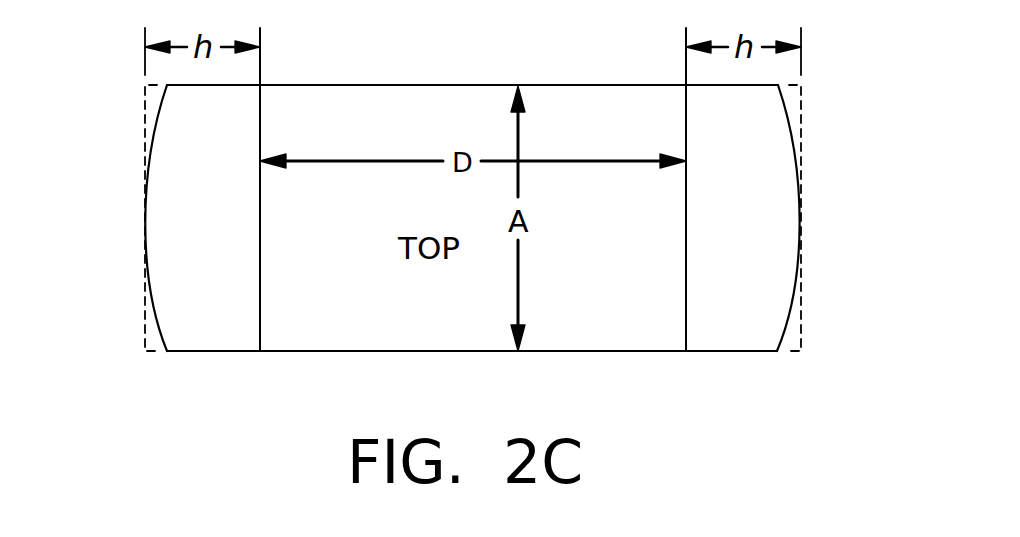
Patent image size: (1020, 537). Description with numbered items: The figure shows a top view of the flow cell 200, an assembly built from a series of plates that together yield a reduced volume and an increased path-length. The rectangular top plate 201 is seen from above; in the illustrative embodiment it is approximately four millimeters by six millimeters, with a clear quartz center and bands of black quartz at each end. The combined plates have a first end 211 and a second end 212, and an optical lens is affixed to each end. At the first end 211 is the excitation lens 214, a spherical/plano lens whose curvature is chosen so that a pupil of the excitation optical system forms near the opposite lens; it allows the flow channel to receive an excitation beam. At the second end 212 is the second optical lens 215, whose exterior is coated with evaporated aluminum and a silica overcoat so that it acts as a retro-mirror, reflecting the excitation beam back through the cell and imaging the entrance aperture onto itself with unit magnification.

The flow cell 200 is at (803, 150).
The top plate 201 is at (331, 337).
The first end 211 is at (168, 85).
The second end 212 is at (778, 85).
The excitation lens 214 is at (165, 212).
The second optical lens 215 is at (783, 216).